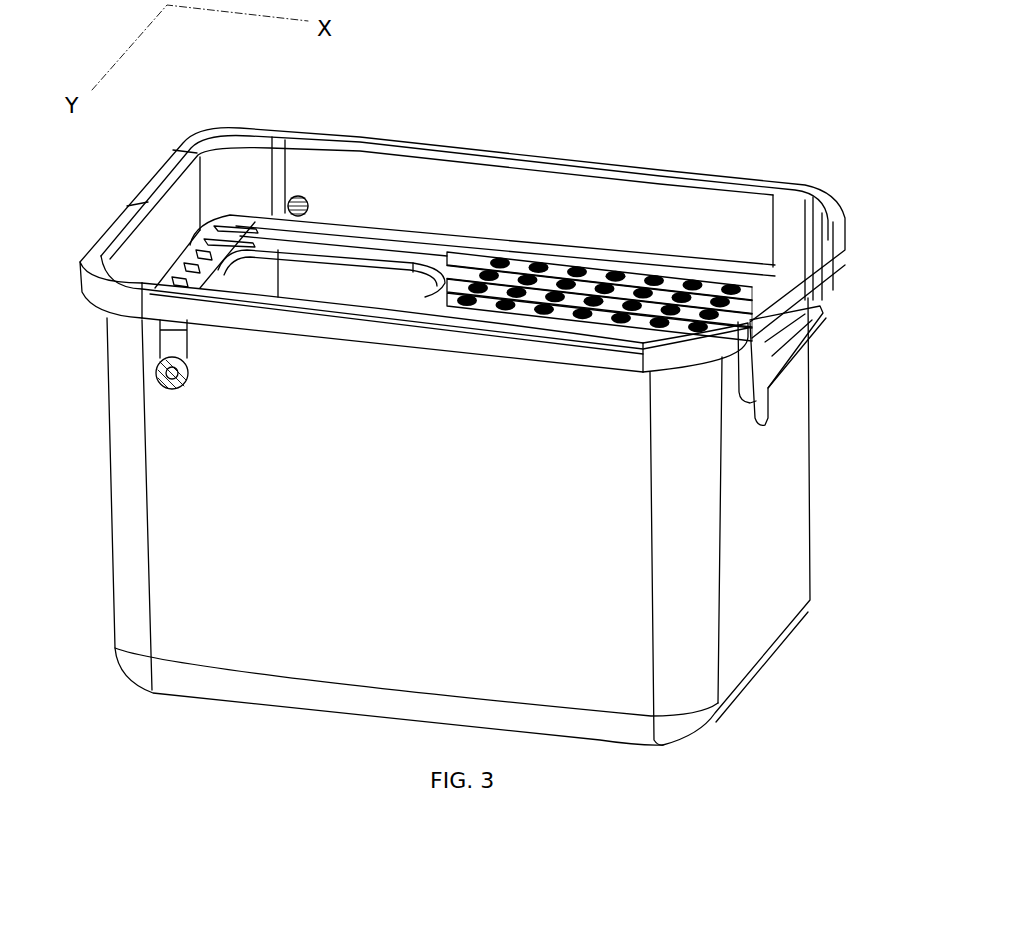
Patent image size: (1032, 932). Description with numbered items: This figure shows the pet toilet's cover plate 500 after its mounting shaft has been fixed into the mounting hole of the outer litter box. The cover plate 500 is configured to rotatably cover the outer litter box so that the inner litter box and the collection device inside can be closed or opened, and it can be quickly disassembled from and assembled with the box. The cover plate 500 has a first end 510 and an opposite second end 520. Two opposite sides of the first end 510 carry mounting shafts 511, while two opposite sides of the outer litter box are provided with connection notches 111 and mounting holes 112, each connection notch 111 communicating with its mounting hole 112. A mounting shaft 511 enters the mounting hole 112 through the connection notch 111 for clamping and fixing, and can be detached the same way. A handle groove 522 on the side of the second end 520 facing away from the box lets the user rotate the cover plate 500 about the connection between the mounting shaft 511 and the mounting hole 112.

The connection notch 111 is at (150, 328).
The mounting hole 112 is at (150, 382).
The cover plate 500 is at (785, 312).
The first end 510 is at (235, 232).
The mounting shaft 511 is at (188, 377).
The second end 520 is at (728, 273).
The handle groove 522 is at (815, 355).